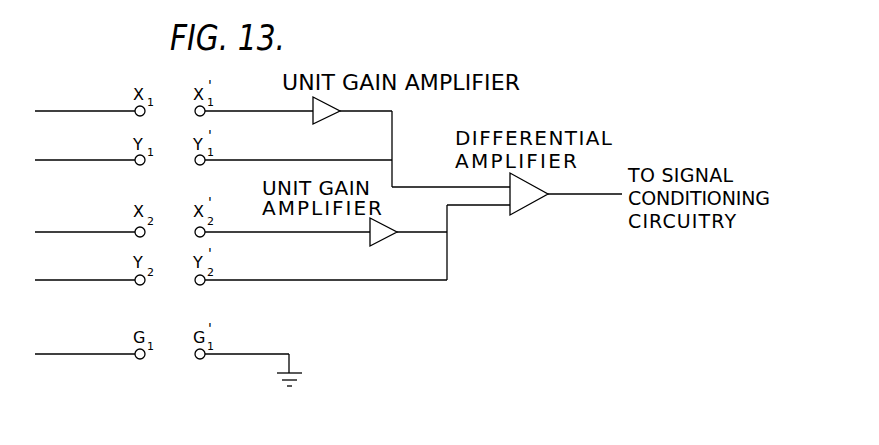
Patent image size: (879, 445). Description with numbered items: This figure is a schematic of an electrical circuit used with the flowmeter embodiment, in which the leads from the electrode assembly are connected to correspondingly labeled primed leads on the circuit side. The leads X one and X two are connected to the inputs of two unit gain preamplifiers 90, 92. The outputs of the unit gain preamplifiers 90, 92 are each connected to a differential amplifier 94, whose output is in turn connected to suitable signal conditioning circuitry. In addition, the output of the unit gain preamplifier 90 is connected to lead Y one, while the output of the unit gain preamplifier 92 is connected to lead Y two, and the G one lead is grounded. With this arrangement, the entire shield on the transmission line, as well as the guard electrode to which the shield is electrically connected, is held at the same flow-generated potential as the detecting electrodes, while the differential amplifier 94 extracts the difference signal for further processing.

The unit gain preamplifier 90 is at (319, 117).
The unit gain preamplifier 92 is at (377, 238).
The differential amplifier 94 is at (521, 205).